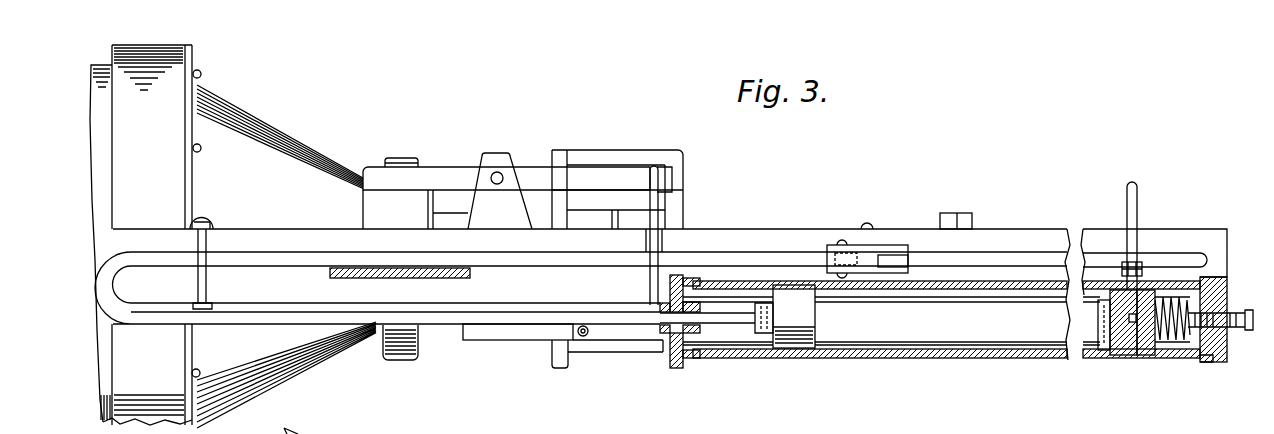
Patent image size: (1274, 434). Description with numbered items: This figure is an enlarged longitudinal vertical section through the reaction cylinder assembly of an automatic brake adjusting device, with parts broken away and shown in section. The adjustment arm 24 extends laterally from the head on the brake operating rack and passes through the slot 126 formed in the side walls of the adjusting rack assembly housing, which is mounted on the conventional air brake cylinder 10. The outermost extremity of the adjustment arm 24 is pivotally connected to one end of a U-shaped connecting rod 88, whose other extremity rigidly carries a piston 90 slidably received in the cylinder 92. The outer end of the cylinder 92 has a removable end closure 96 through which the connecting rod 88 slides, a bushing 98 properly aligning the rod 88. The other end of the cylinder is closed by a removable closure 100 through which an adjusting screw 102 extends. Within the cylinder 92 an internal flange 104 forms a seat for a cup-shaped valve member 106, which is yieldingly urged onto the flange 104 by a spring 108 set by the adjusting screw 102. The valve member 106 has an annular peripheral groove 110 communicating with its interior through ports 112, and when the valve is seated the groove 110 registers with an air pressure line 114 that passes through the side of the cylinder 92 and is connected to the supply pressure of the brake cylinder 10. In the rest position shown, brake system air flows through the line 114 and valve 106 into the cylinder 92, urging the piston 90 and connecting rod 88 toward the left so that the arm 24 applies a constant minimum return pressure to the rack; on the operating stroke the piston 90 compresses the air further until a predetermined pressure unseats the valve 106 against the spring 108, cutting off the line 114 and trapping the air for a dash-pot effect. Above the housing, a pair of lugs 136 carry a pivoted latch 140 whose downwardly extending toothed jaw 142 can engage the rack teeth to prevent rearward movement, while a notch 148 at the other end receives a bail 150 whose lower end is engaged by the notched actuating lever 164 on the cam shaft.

The air brake cylinder 10 is at (173, 80).
The adjustment arm 24 is at (897, 259).
The U-shaped connecting rod 88 is at (274, 250).
The piston 90 is at (798, 313).
The cylinder 92 is at (880, 358).
The removable end closure 96 is at (666, 348).
The bushing 98 is at (660, 305).
The removable closure 100 is at (1222, 295).
The adjusting screw 102 is at (1238, 327).
The internal flange 104 is at (1110, 295).
The cup-shaped valve member 106 is at (1145, 332).
The spring 108 is at (1178, 332).
The annular peripheral groove 110 is at (1135, 285).
The ports 112 is at (1130, 322).
The air pressure line 114 is at (1128, 213).
The slot 126 is at (1012, 257).
The lugs 136 is at (510, 158).
The latch 140 is at (453, 178).
The jaw 142 is at (380, 202).
The notch 148 is at (654, 175).
The bail 150 is at (656, 243).
The actuating lever 164 is at (612, 332).